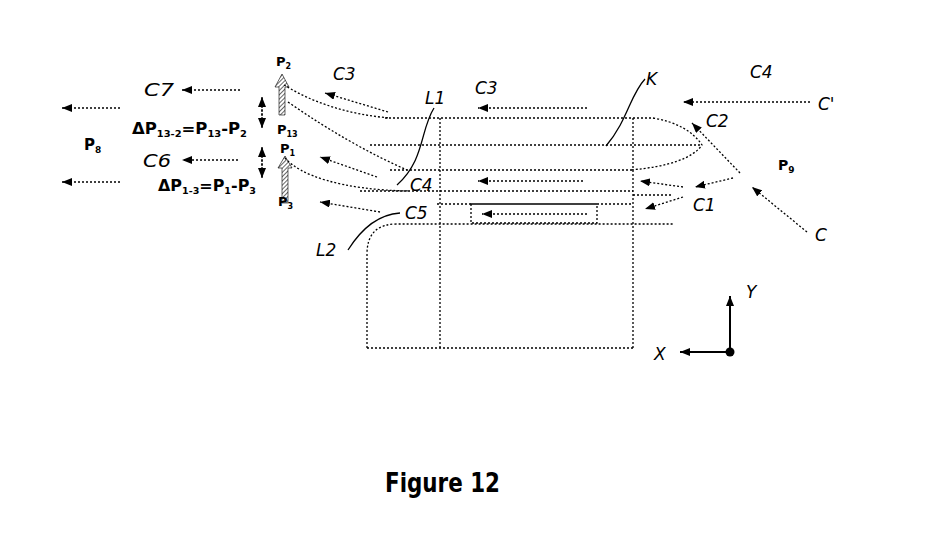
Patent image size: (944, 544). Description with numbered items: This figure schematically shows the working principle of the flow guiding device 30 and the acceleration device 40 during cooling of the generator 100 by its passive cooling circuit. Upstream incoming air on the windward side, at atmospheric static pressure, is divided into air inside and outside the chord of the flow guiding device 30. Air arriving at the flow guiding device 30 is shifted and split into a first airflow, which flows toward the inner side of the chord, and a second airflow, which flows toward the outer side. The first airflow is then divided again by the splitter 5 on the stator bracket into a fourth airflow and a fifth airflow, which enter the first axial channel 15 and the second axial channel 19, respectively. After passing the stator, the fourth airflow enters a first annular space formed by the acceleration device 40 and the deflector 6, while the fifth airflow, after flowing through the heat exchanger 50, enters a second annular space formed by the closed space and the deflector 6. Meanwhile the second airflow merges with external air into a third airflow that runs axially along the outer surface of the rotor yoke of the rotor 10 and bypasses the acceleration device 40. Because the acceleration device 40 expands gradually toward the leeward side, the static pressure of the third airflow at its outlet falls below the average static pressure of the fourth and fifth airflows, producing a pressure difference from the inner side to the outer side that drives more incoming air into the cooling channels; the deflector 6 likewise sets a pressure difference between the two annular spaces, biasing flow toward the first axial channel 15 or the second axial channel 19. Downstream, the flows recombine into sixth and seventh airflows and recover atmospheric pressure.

The generator 100 is at (512, 100).
The rotor 10 is at (592, 118).
The flow guiding device 30 is at (663, 120).
The acceleration device 40 is at (300, 97).
The deflector 6 is at (318, 177).
The splitter 5 is at (640, 190).
The first axial channel 15 is at (445, 178).
The heat exchanger 50 is at (532, 217).
The second axial channel 19 is at (623, 217).